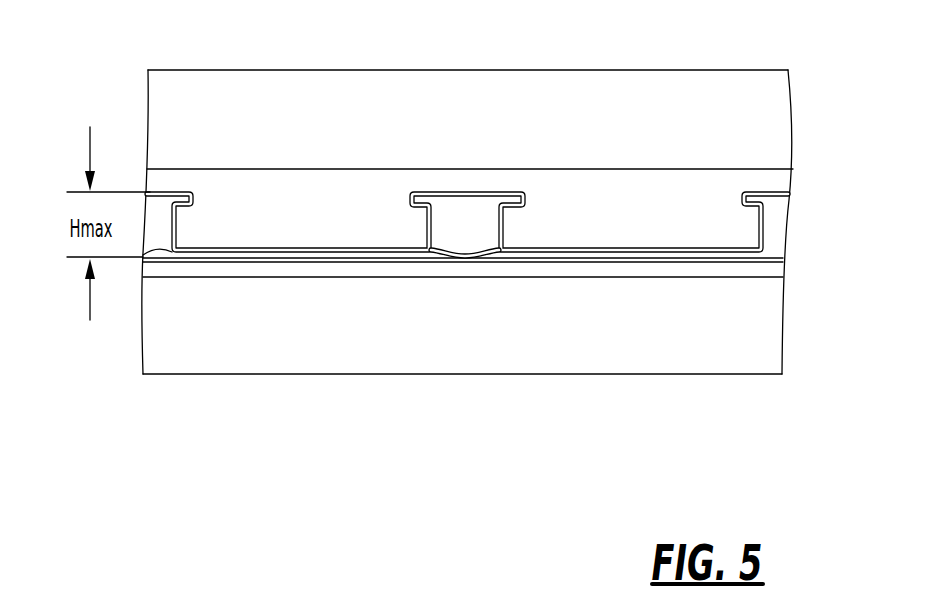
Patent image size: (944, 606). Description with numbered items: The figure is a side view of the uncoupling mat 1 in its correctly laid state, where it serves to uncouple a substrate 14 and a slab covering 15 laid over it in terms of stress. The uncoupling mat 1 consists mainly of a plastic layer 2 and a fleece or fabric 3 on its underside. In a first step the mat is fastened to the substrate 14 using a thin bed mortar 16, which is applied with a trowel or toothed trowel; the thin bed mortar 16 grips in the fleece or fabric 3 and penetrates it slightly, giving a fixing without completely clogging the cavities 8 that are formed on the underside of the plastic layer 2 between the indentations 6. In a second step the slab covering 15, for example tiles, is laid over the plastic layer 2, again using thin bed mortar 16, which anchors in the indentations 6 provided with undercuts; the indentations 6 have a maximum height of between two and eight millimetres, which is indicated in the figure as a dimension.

The uncoupling mat 1 is at (781, 201).
The plastic layer 2 is at (470, 172).
The fleece or fabric 3 is at (731, 268).
The indentations 6 is at (638, 192).
The cavities 8 is at (152, 243).
The substrate 14 is at (480, 357).
The slab covering 15 is at (377, 83).
The thin bed mortar 16 is at (238, 183).